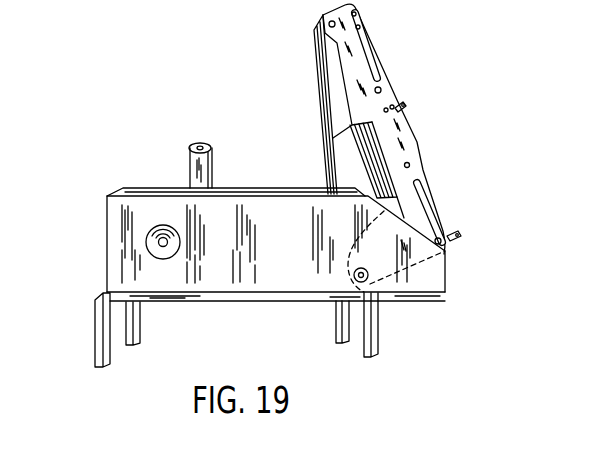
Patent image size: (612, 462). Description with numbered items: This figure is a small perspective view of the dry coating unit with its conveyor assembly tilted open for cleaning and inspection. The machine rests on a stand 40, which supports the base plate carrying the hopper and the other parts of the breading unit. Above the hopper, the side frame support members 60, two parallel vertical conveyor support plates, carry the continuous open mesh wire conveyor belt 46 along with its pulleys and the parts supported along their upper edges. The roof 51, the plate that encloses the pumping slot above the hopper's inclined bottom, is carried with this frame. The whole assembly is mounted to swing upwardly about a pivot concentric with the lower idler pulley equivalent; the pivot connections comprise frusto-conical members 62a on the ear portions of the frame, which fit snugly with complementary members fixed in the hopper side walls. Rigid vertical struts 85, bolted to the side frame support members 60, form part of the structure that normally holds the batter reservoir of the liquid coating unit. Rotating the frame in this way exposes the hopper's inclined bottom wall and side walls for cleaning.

The stand 40 is at (270, 300).
The conveyor belt 46 is at (316, 82).
The roof 51 is at (350, 103).
The side frame support members 60 is at (382, 90).
The struts 85 is at (405, 107).
The frusto-conical members 62a is at (368, 276).